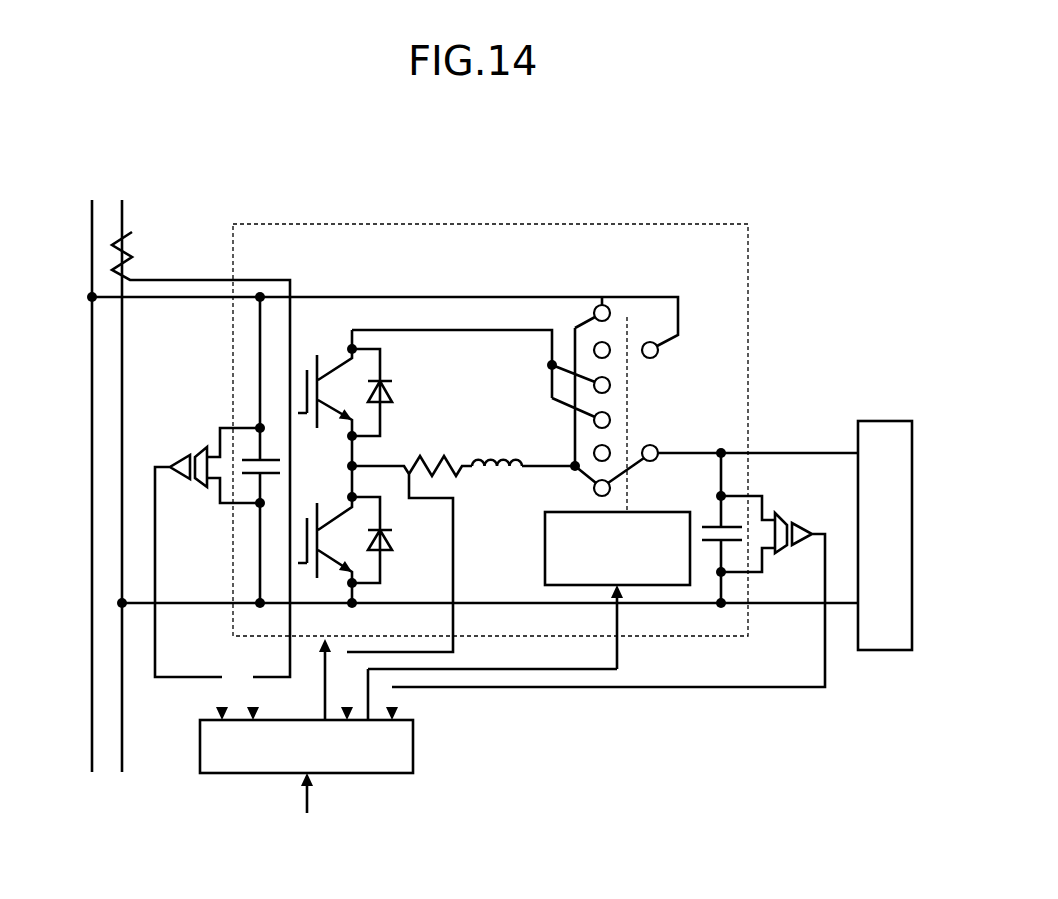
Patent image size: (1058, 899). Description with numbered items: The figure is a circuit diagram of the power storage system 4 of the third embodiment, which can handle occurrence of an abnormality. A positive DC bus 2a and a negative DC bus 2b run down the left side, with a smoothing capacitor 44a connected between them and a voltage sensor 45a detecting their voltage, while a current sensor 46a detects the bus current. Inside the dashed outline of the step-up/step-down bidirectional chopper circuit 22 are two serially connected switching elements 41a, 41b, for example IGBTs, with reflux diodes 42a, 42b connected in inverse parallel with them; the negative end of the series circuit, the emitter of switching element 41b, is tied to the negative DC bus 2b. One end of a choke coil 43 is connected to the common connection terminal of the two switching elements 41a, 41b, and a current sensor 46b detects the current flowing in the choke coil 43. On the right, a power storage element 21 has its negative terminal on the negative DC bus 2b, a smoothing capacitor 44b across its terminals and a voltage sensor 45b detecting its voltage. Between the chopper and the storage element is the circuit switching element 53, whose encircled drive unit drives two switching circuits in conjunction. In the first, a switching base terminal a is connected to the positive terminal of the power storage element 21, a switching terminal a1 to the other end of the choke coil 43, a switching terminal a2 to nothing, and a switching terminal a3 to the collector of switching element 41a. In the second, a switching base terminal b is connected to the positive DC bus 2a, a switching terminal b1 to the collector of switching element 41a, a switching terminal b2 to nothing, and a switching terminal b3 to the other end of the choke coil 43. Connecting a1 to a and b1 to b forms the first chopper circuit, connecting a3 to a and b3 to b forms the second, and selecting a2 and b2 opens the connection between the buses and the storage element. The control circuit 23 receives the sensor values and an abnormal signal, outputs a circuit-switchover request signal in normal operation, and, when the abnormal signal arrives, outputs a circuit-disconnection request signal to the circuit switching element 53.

The power storage system 4 is at (623, 163).
The positive DC bus 2a is at (90, 328).
The negative DC bus 2b is at (124, 328).
The power storage element 21 is at (880, 420).
The step-up/step-down bidirectional chopper circuit 22 is at (545, 430).
The control circuit 23 is at (416, 740).
The switching element 41a is at (300, 388).
The switching element 41b is at (300, 562).
The reflux diode 42a is at (395, 388).
The reflux diode 42b is at (390, 552).
The choke coil 43 is at (490, 455).
The smoothing capacitor 44a is at (247, 455).
The smoothing capacitor 44b is at (705, 510).
The voltage sensor 45a is at (180, 453).
The voltage sensor 45b is at (804, 522).
The current sensor 46a is at (135, 254).
The current sensor 46b is at (422, 455).
The circuit switching element 53 is at (543, 540).
The switching base terminal a is at (652, 462).
The switching terminal a1 is at (594, 488).
The switching terminal a2 is at (610, 452).
The switching terminal a3 is at (610, 420).
The switching base terminal b is at (652, 342).
The switching terminal b1 is at (610, 385).
The switching terminal b2 is at (598, 343).
The switching terminal b3 is at (603, 305).